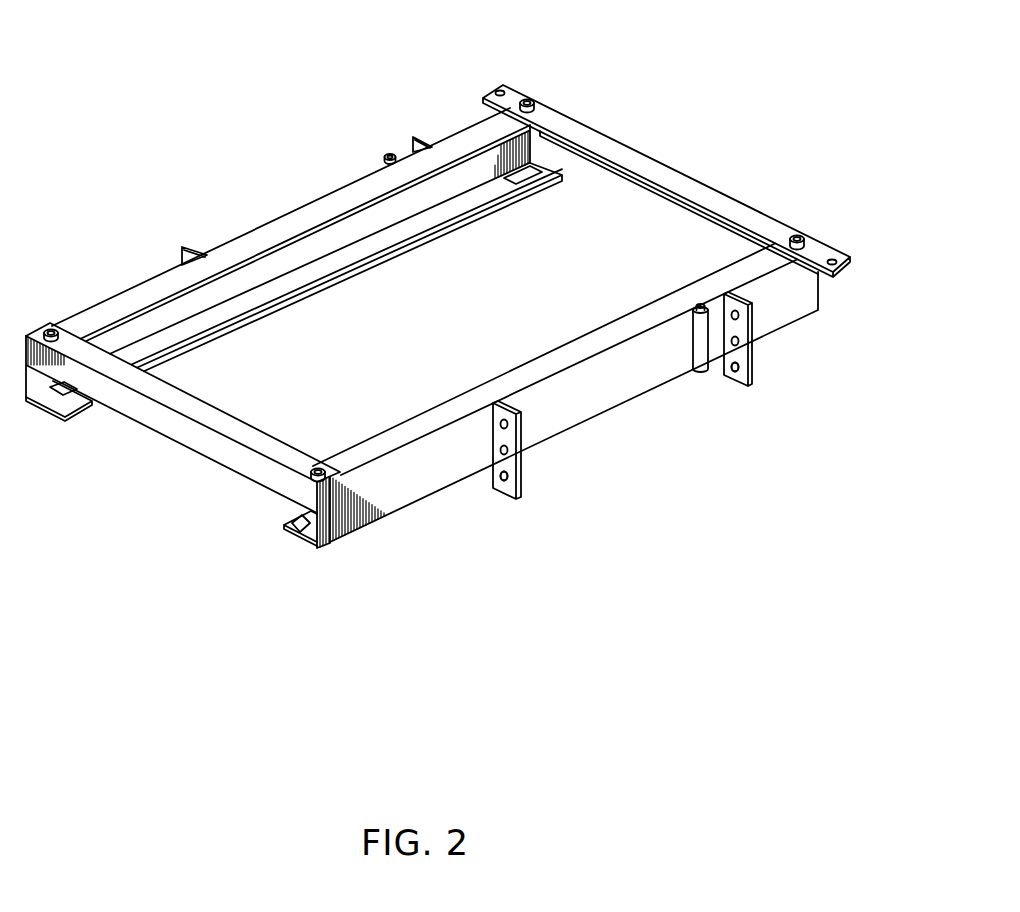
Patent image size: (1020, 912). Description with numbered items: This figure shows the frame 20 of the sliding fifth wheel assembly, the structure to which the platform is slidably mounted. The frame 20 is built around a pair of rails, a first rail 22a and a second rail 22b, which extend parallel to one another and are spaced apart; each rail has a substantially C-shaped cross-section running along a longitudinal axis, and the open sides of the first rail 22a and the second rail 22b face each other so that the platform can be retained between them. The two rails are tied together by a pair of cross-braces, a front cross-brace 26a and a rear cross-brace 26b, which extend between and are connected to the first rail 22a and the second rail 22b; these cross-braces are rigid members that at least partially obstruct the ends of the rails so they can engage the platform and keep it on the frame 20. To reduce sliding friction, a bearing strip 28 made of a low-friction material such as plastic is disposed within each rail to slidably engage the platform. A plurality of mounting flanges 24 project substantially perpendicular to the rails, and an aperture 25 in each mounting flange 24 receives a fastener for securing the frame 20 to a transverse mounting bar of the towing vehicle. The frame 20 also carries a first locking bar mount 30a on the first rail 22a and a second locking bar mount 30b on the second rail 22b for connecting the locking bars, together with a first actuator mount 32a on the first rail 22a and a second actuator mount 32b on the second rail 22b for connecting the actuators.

The frame 20 is at (178, 104).
The first rail 22a is at (783, 310).
The second rail 22b is at (452, 136).
The mounting flange 24 is at (416, 138).
The aperture 25 is at (731, 376).
The front cross-brace 26a is at (168, 427).
The rear cross-brace 26b is at (694, 182).
The bearing strip 28 is at (298, 278).
The first locking bar mount 30a is at (700, 373).
The second locking bar mount 30b is at (388, 156).
The first actuator mount 32a is at (854, 256).
The second actuator mount 32b is at (509, 86).